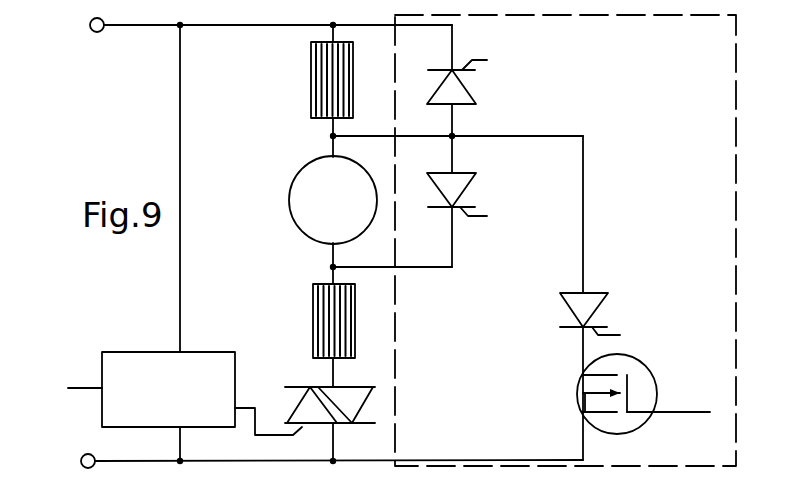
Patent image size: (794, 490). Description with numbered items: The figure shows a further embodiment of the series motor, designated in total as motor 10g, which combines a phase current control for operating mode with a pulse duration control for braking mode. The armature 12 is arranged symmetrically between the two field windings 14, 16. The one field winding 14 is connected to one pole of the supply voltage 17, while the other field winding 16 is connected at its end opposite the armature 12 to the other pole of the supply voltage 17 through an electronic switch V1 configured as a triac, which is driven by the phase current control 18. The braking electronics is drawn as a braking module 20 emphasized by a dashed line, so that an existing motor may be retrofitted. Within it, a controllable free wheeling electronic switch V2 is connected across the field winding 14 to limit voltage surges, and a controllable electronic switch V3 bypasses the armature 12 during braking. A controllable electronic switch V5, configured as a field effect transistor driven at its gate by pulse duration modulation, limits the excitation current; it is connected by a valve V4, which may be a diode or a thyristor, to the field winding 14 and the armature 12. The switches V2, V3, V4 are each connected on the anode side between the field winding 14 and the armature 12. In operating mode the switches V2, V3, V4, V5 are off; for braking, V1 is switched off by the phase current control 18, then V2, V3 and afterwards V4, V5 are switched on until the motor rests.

The series motor 10g is at (61, 77).
The supply voltage 17 is at (99, 33).
The field winding 14 is at (327, 85).
The armature 12 is at (312, 203).
The field winding 16 is at (328, 327).
The phase current control 18 is at (137, 363).
The braking module 20 is at (700, 97).
The electronic switch V1 is at (353, 398).
The free wheeling electronic switch V2 is at (458, 92).
The electronic switch V3 is at (458, 185).
The valve V4 is at (590, 304).
The controllable electronic switch V5 is at (640, 388).